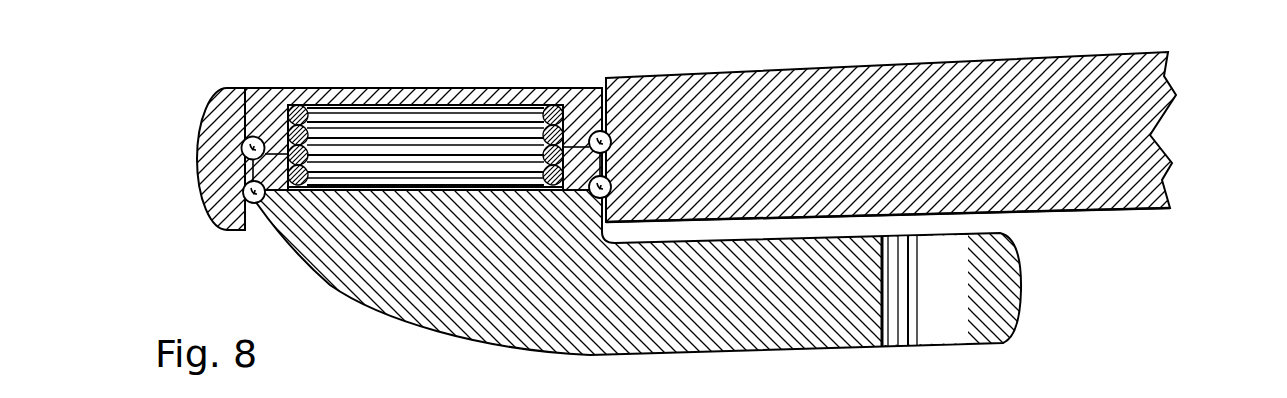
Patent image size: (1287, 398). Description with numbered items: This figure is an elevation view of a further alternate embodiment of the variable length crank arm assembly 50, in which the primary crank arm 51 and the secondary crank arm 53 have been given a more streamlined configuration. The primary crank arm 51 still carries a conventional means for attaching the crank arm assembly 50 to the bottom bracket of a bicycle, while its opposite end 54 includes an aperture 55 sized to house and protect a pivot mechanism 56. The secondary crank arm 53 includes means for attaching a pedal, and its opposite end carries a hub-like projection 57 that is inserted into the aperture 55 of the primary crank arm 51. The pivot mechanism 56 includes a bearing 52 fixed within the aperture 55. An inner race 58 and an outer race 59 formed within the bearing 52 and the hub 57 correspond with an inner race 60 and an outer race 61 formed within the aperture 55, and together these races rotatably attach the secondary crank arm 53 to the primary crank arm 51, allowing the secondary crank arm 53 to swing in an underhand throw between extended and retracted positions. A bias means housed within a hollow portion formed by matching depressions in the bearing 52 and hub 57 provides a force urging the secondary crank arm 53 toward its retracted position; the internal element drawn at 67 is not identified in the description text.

The variable length crank arm assembly 50 is at (1180, 117).
The primary crank arm 51 is at (1082, 210).
The bearing 52 is at (265, 118).
The secondary crank arm 53 is at (752, 352).
The opposite end of the primary crank arm 54 is at (196, 150).
The aperture 55 is at (248, 210).
The pivot mechanism 56 is at (437, 86).
The hub-like projection 57 is at (326, 224).
The inner race 58 is at (589, 133).
The outer race 59 is at (587, 191).
The inner race 60 is at (612, 138).
The outer race 61 is at (612, 183).
The spring assembly 67 is at (493, 150).